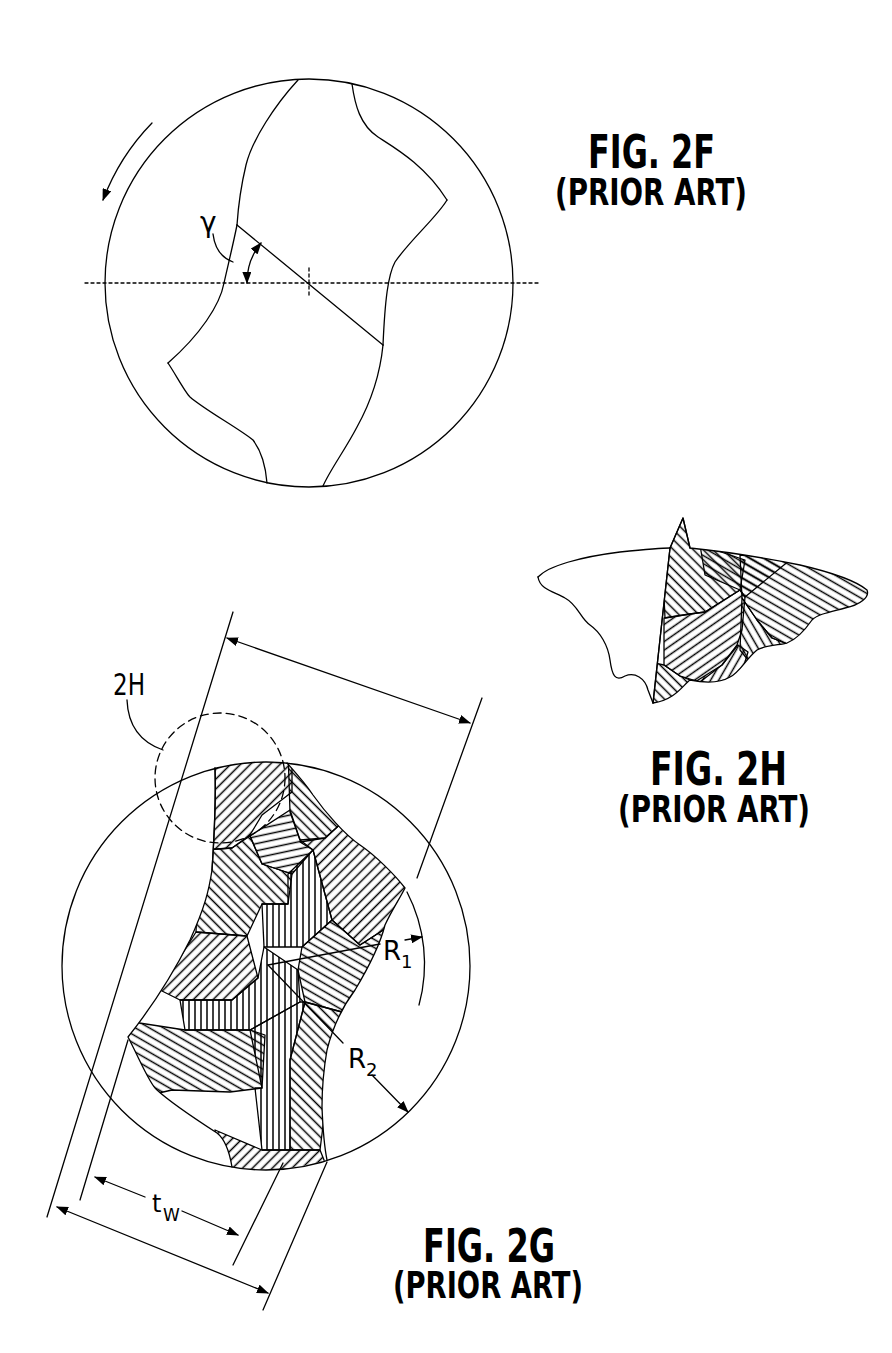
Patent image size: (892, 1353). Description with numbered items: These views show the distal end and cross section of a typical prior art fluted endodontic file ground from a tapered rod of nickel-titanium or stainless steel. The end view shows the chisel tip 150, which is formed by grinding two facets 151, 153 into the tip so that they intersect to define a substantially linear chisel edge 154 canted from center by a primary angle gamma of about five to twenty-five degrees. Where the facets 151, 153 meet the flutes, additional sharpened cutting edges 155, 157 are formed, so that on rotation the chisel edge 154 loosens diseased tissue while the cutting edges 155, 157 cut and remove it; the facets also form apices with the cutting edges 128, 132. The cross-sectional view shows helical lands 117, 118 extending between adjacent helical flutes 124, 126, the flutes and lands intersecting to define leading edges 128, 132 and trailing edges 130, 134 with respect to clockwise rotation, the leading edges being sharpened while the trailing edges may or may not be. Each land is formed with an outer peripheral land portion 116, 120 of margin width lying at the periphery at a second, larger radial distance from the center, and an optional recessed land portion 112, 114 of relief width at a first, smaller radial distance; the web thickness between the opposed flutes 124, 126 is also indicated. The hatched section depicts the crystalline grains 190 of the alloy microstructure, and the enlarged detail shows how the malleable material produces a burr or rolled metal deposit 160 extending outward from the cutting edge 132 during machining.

In FIG. 2G, the recessed land portion 112 is at (338, 812).
In FIG. 2G, the recessed land portion 114 is at (157, 1092).
In FIG. 2G, the outer peripheral land portion 116 is at (288, 1163).
In FIG. 2G, the helical land 117 is at (337, 672).
In FIG. 2G, the helical land 118 is at (173, 1260).
In FIG. 2H, the outer peripheral land portion 120 is at (760, 619).
In FIG. 2G, the outer peripheral land portion 120 is at (329, 939).
In FIG. 2G, the helical flute 124 is at (357, 995).
In FIG. 2G, the helical flute 126 is at (168, 946).
In FIG. 2F, the leading edge 128 is at (323, 486).
In FIG. 2G, the leading edge 128 is at (327, 1160).
In FIG. 2G, the trailing edge 130 is at (410, 897).
In FIG. 2F, the leading edge 132 is at (298, 80).
In FIG. 2H, the leading edge 132 is at (657, 544).
In FIG. 2G, the leading edge 132 is at (213, 766).
In FIG. 2G, the trailing edge 134 is at (128, 1037).
In FIG. 2F, the chisel tip 150 is at (415, 90).
In FIG. 2F, the facet 151 is at (382, 180).
In FIG. 2F, the facet 153 is at (212, 388).
In FIG. 2F, the chisel edge 154 is at (357, 340).
In FIG. 2F, the additional cutting edge 155 is at (250, 143).
In FIG. 2F, the additional cutting edge 157 is at (344, 462).
In FIG. 2H, the burr or rolled metal deposit 160 is at (692, 540).
In FIG. 2H, the grains 190 is at (712, 680).
In FIG. 2G, the grains 190 is at (396, 888).